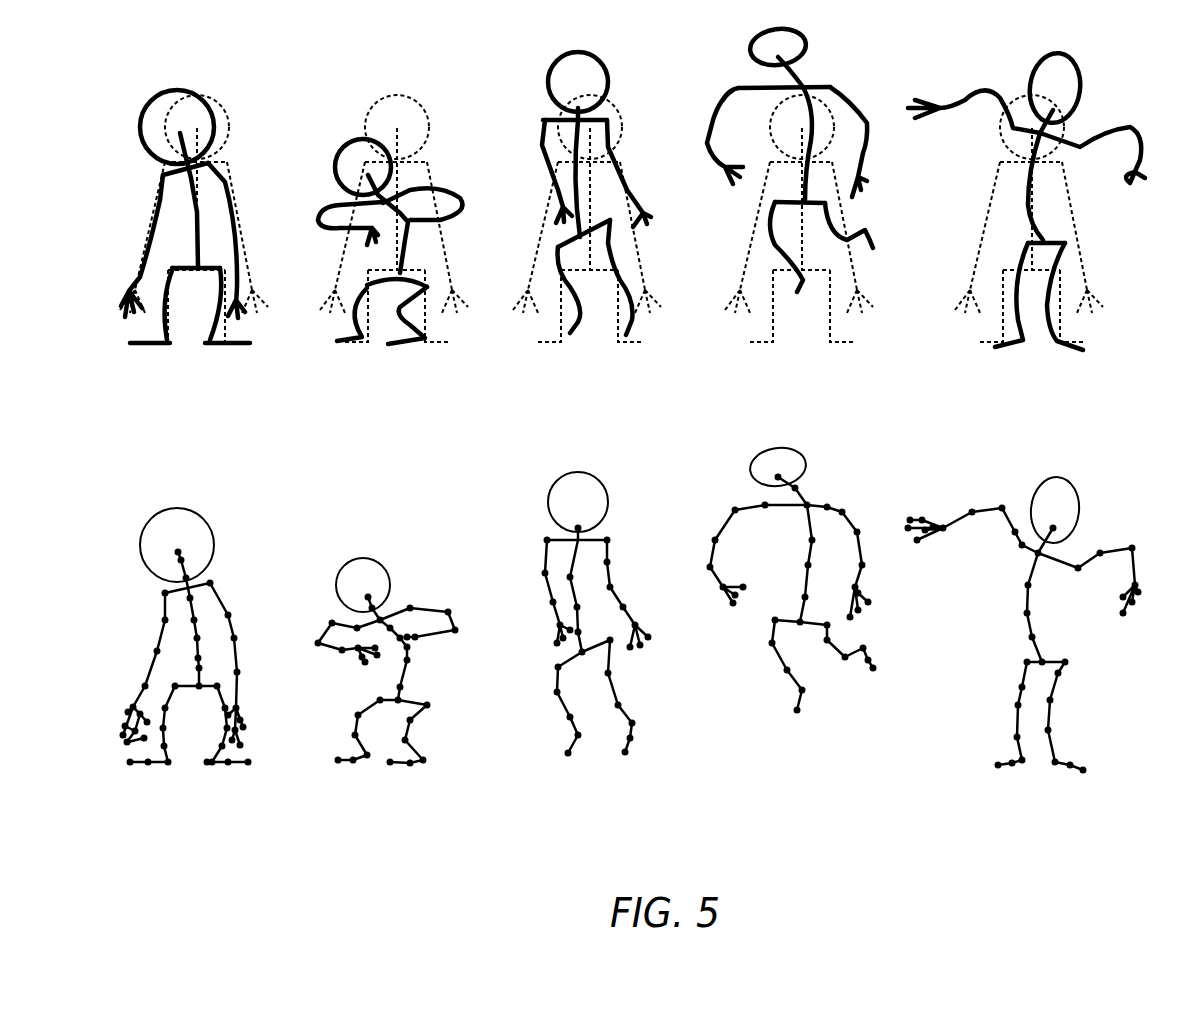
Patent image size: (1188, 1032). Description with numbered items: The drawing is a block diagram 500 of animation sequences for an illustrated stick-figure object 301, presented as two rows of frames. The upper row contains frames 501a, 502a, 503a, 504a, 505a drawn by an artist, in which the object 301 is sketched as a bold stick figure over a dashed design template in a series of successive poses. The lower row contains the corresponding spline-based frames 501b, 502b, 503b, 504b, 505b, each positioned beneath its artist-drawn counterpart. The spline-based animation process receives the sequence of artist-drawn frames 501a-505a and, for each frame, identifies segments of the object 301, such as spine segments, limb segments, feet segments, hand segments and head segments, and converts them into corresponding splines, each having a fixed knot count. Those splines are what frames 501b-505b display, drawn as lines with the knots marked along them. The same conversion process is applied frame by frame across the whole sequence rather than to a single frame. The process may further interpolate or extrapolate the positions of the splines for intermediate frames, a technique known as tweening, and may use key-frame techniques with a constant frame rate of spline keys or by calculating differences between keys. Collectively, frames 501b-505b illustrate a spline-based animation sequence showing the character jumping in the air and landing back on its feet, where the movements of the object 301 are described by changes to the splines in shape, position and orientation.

The block diagram 500 is at (1139, 42).
The figure 301 is at (142, 116).
The artist-drawn frame 501a is at (218, 396).
The artist-drawn frame 502a is at (418, 396).
The artist-drawn frame 503a is at (619, 396).
The artist-drawn frame 504a is at (843, 396).
The artist-drawn frame 505a is at (1069, 396).
The spline-based frame 501b is at (218, 822).
The spline-based frame 502b is at (418, 822).
The spline-based frame 503b is at (637, 822).
The spline-based frame 504b is at (862, 822).
The spline-based frame 505b is at (1090, 822).